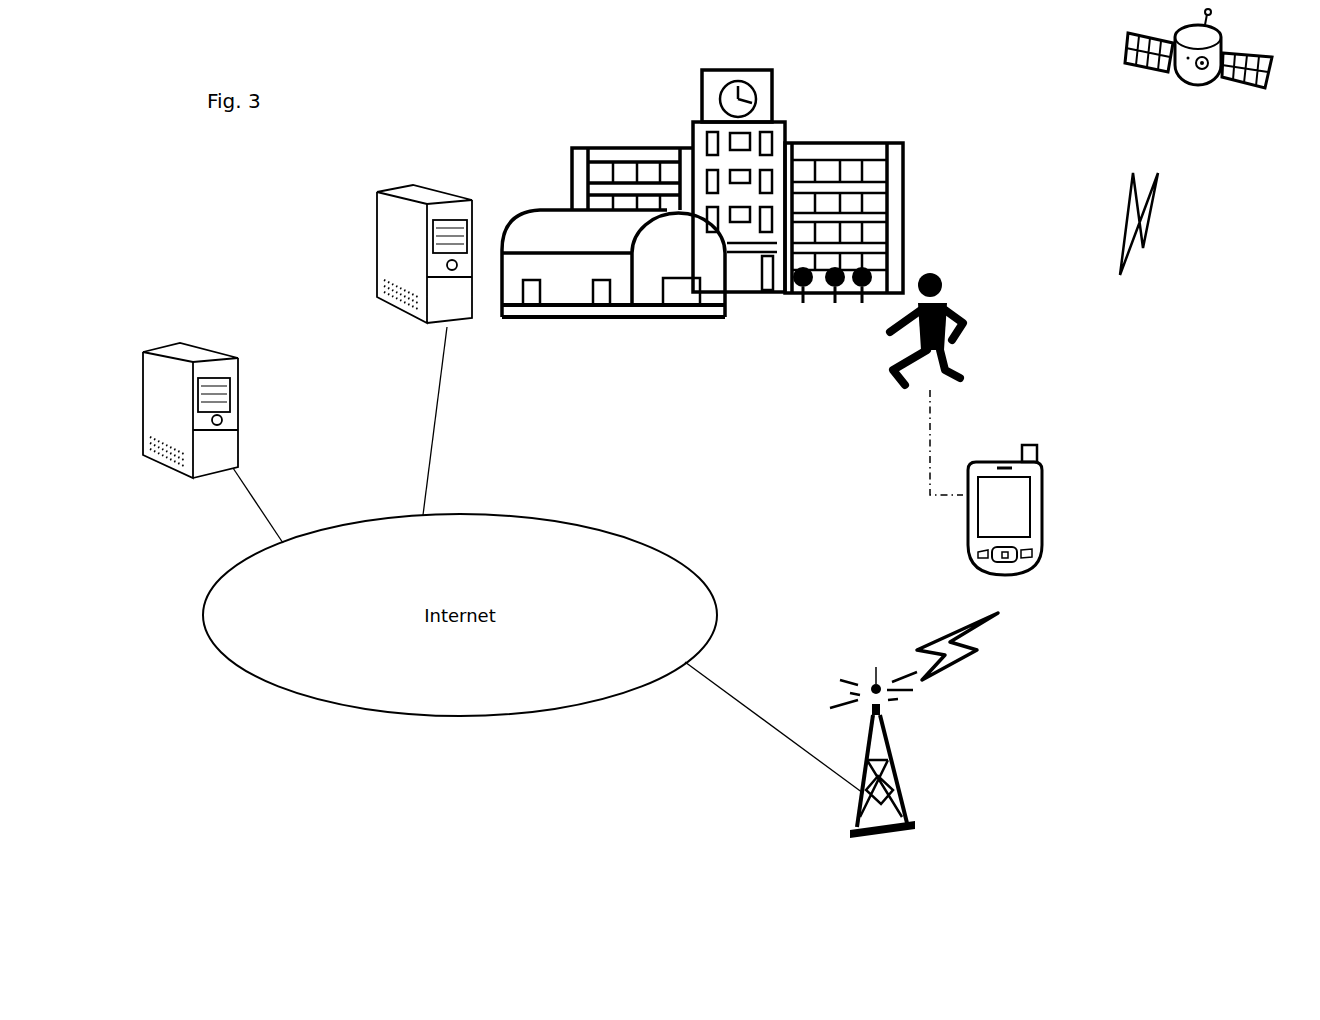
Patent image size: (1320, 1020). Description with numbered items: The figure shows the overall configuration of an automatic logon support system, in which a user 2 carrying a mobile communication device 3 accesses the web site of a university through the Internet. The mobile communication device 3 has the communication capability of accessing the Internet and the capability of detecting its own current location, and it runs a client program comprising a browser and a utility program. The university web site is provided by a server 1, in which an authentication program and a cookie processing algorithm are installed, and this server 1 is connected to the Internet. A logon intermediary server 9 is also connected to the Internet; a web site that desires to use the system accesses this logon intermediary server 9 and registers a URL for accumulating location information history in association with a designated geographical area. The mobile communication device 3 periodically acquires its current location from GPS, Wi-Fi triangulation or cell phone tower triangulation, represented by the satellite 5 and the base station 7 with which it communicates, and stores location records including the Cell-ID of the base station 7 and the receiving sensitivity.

The server 1 is at (377, 285).
The logon intermediary server 9 is at (185, 482).
The user 2 is at (885, 350).
The mobile communication device 3 is at (957, 540).
The satellite 5 is at (1103, 63).
The base station 7 is at (850, 808).